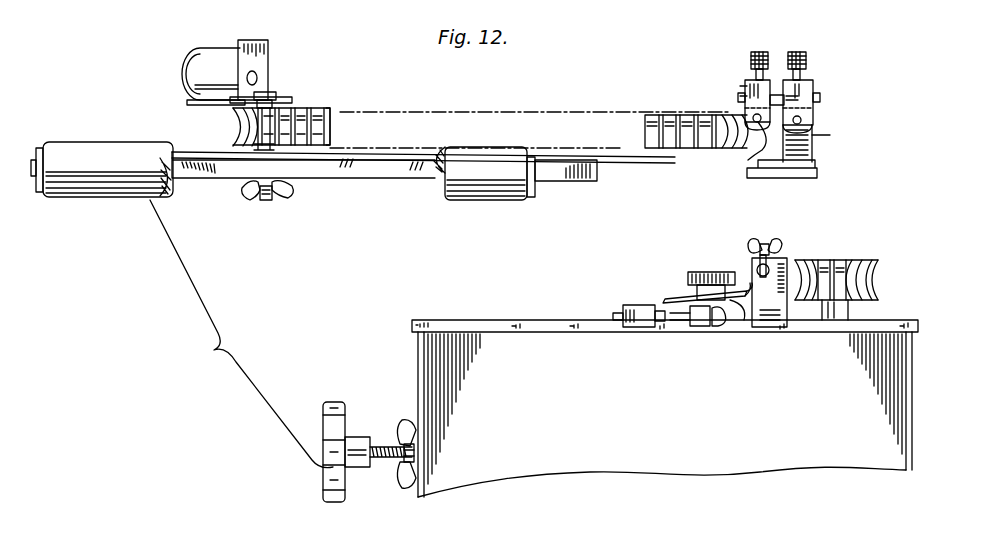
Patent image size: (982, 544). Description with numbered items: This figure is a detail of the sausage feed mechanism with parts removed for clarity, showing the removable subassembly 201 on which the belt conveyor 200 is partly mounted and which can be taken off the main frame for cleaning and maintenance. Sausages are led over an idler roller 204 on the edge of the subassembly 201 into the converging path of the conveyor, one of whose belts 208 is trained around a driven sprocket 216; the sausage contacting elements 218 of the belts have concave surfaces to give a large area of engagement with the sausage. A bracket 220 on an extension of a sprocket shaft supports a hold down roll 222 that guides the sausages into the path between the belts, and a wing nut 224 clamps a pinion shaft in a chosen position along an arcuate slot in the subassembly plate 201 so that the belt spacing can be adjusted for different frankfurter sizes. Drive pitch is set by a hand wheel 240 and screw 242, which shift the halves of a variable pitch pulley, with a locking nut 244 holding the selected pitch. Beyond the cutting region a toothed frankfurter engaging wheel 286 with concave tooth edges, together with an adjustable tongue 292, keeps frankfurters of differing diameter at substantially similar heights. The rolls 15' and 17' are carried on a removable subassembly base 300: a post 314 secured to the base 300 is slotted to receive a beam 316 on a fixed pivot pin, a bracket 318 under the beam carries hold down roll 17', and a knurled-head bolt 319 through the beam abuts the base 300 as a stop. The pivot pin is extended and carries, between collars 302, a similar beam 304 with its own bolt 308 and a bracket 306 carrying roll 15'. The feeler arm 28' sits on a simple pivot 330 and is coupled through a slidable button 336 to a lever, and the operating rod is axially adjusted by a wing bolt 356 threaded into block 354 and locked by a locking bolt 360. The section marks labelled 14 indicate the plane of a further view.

The table 14 is at (215, 455).
The roll 15' is at (737, 147).
The hold down roll 17' is at (840, 127).
The feeler arm 28' is at (730, 333).
The belt conveyor 200 is at (324, 94).
The subassembly 201 is at (372, 158).
The idler roller 204 is at (105, 150).
The belt 208 is at (335, 116).
The driven sprocket 216 is at (690, 274).
The sausage contacting elements 218 is at (648, 130).
The bracket 220 is at (262, 58).
The hold down roll 222 is at (212, 64).
The wing nut 224 is at (246, 200).
The hand wheel 240 is at (333, 402).
The screw 242 is at (385, 446).
The locking nut 244 is at (402, 484).
The frankfurter engaging wheel 286 is at (850, 262).
The adjustable tongue 292 is at (700, 300).
The subassembly base 300 is at (812, 180).
The collars 302 is at (752, 80).
The beam 304 is at (746, 92).
The bracket 306 is at (752, 118).
The bolt 308 is at (758, 52).
The post 314 is at (800, 82).
The beam 316 is at (812, 98).
The bracket 318 is at (802, 122).
The bolt 319 is at (800, 52).
The pivot 330 is at (688, 322).
The slidable button 336 is at (722, 326).
The block 354 is at (775, 305).
The wing bolt 356 is at (778, 252).
The locking bolt 360 is at (757, 268).